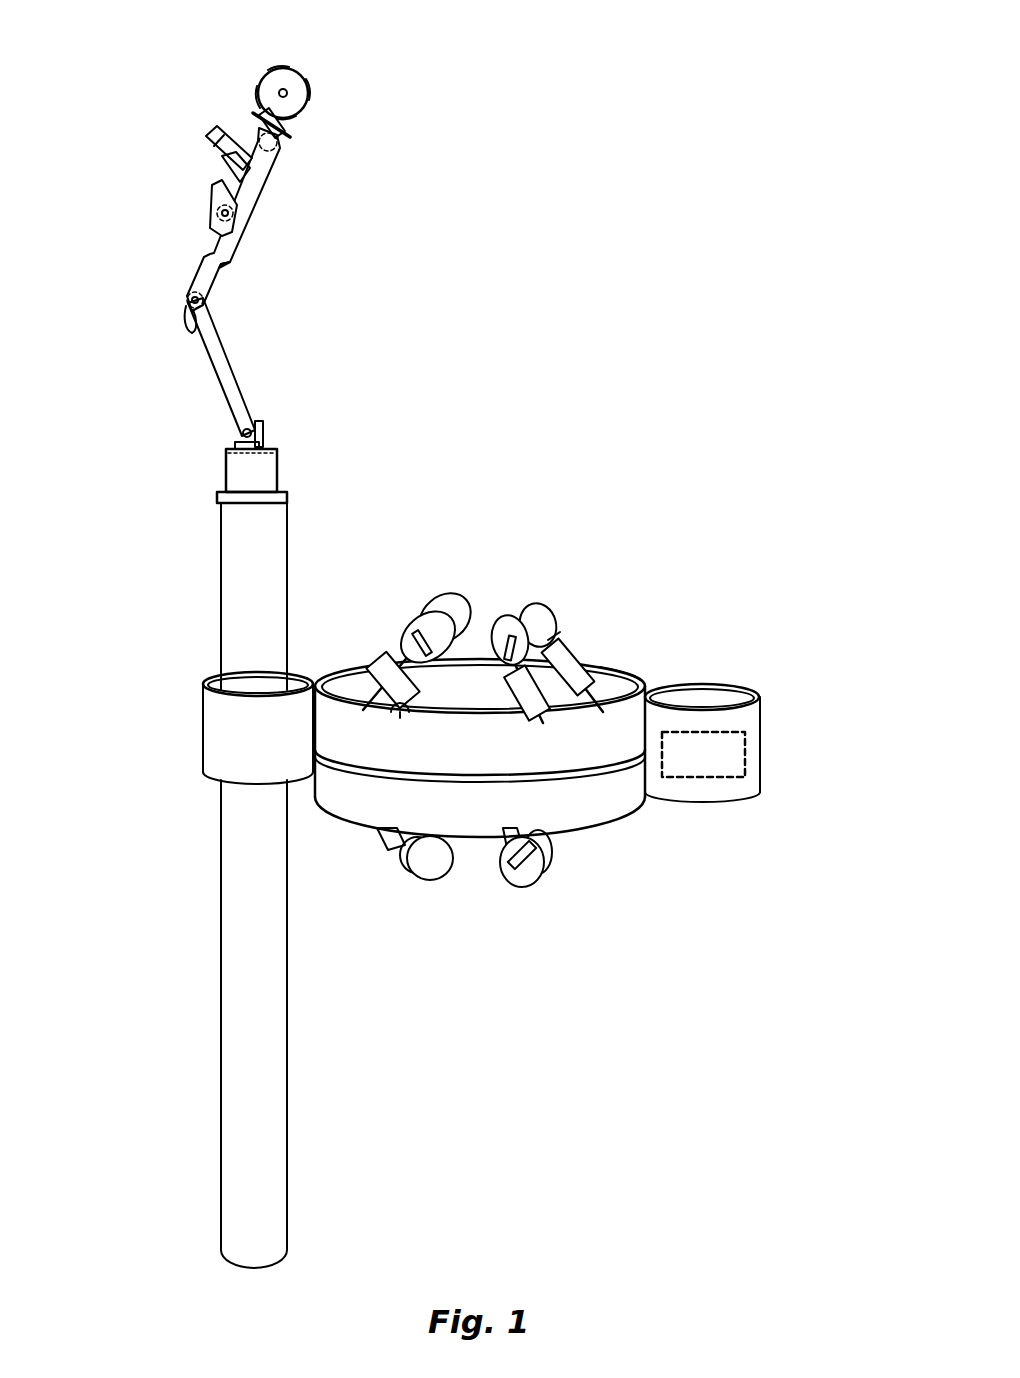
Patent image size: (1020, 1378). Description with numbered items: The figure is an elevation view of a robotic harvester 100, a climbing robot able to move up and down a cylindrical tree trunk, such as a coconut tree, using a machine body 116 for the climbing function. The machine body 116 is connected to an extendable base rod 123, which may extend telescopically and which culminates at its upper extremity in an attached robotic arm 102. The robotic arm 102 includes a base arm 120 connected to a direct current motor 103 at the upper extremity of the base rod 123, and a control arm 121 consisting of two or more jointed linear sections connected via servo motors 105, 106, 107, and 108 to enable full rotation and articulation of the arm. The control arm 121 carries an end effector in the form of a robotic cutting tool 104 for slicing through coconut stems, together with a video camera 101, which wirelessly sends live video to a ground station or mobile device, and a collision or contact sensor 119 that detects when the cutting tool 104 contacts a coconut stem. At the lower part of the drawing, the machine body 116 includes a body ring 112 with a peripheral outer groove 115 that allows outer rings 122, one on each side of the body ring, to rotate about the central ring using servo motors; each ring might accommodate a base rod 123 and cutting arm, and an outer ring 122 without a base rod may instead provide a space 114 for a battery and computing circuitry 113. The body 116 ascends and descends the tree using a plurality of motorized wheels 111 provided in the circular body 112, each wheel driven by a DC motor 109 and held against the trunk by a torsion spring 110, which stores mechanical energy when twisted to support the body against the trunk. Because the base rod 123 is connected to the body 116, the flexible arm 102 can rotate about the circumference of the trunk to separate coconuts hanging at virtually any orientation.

The robotic harvester 100 is at (486, 234).
The video camera 101 is at (214, 130).
The robotic arm 102 is at (162, 282).
The direct current (DC) motor 103 is at (265, 443).
The robotic cutting tool 104 is at (313, 90).
The servo motor 105 is at (280, 143).
The servo motor 106 is at (222, 213).
The servo motor 107 is at (200, 300).
The servo motor 108 is at (286, 288).
The DC motor 109 is at (567, 668).
The torsion spring 110 is at (600, 672).
The motorized wheels 111 is at (535, 603).
The body ring 112 is at (620, 672).
The computing circuitry 113 is at (745, 757).
The space 114 is at (702, 705).
The peripheral outer groove 115 is at (550, 778).
The machine body 116 is at (477, 900).
The collision or contact sensor 119 is at (222, 158).
The base arm 120 is at (212, 370).
The control arm 121 is at (255, 220).
The outer rings 122 is at (203, 738).
The extendable base rod 123 is at (287, 1020).